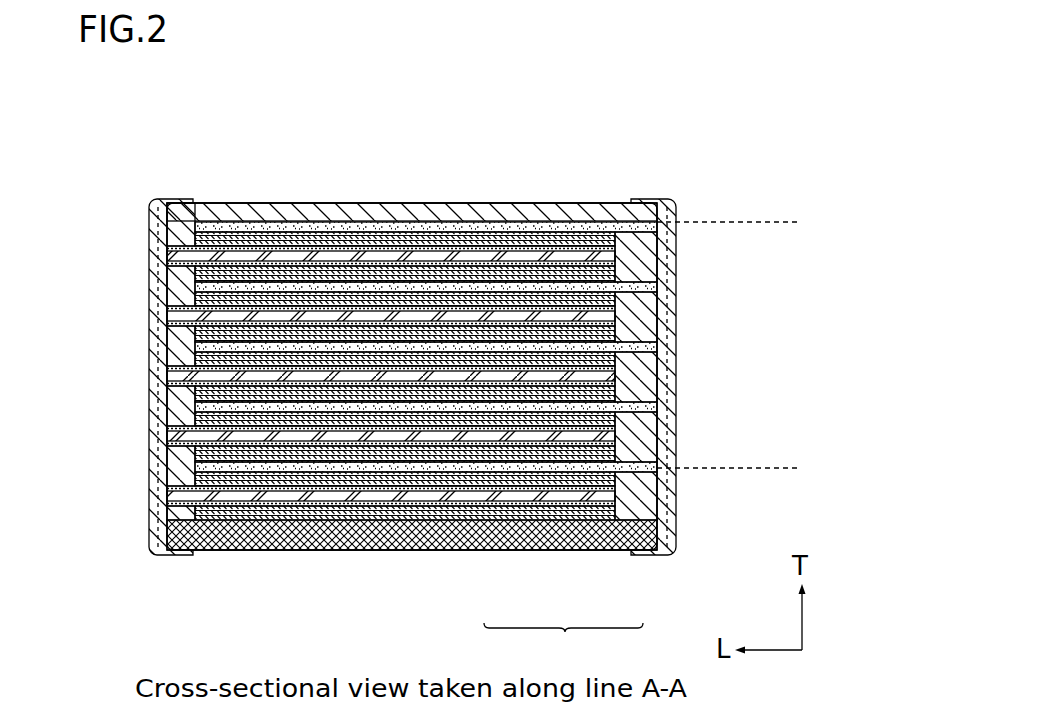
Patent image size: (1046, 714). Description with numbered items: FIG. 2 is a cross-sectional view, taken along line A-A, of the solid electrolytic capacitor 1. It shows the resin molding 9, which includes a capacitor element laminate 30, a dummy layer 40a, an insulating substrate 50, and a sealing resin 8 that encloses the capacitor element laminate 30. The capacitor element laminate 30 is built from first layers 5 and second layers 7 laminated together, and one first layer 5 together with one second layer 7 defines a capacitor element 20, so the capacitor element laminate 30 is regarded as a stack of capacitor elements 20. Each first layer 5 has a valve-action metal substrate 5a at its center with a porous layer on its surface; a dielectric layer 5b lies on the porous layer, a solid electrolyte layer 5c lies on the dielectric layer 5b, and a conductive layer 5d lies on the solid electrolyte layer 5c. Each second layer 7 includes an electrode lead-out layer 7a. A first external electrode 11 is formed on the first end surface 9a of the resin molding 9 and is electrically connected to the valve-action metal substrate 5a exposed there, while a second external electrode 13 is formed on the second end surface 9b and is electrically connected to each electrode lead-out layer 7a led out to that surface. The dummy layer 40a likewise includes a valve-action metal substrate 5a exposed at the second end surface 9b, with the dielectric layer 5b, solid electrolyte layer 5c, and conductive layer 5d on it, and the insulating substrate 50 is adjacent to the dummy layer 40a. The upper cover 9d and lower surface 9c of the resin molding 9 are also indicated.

The multilayer ceramic capacitor 1 is at (686, 160).
The first layer 5 is at (380, 133).
The valve-action metal substrate 5a is at (256, 243).
The dielectric layer 5b is at (303, 238).
The solid electrolyte layer 5c is at (337, 232).
The conductive layer 5d is at (375, 226).
The second layer 7 is at (435, 133).
The electrode lead-out layer 7a is at (427, 250).
The sealing resin 8 is at (478, 203).
The resin molding 9 is at (585, 197).
The first end surface 9a is at (172, 290).
The second end surface 9b is at (662, 302).
The bottom surface 9c is at (325, 553).
The top cover layer 9d is at (509, 210).
The first external electrode 11 is at (158, 348).
The second external electrode 13 is at (678, 375).
The capacitor element 20 is at (425, 93).
The capacitor element laminate 30 is at (798, 222).
The dummy layer 40a is at (563, 643).
The insulating substrate 50 is at (236, 553).